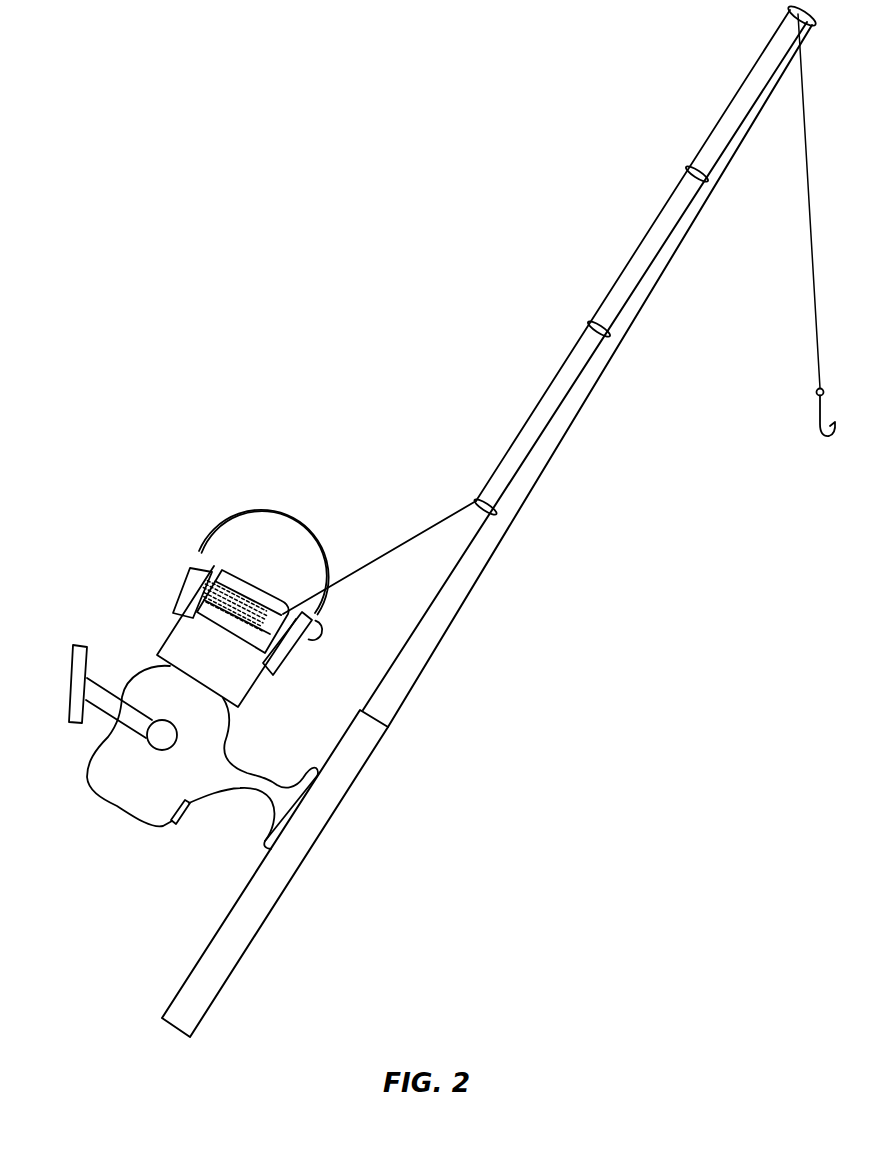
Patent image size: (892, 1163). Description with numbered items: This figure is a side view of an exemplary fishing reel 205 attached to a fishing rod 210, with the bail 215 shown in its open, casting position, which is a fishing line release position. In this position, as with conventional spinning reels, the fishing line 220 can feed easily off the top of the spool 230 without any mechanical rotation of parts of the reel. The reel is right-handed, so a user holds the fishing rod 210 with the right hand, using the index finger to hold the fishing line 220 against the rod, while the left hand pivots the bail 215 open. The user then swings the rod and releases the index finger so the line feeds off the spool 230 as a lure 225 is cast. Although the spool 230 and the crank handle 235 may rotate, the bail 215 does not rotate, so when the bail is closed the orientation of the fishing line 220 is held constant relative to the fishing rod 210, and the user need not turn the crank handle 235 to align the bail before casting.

The fishing reel 205 is at (134, 597).
The fishing rod 210 is at (358, 769).
The bail 215 is at (262, 513).
The fishing line 220 is at (512, 452).
The lure 225 is at (820, 418).
The spool 230 is at (189, 587).
The crank handle 235 is at (118, 715).